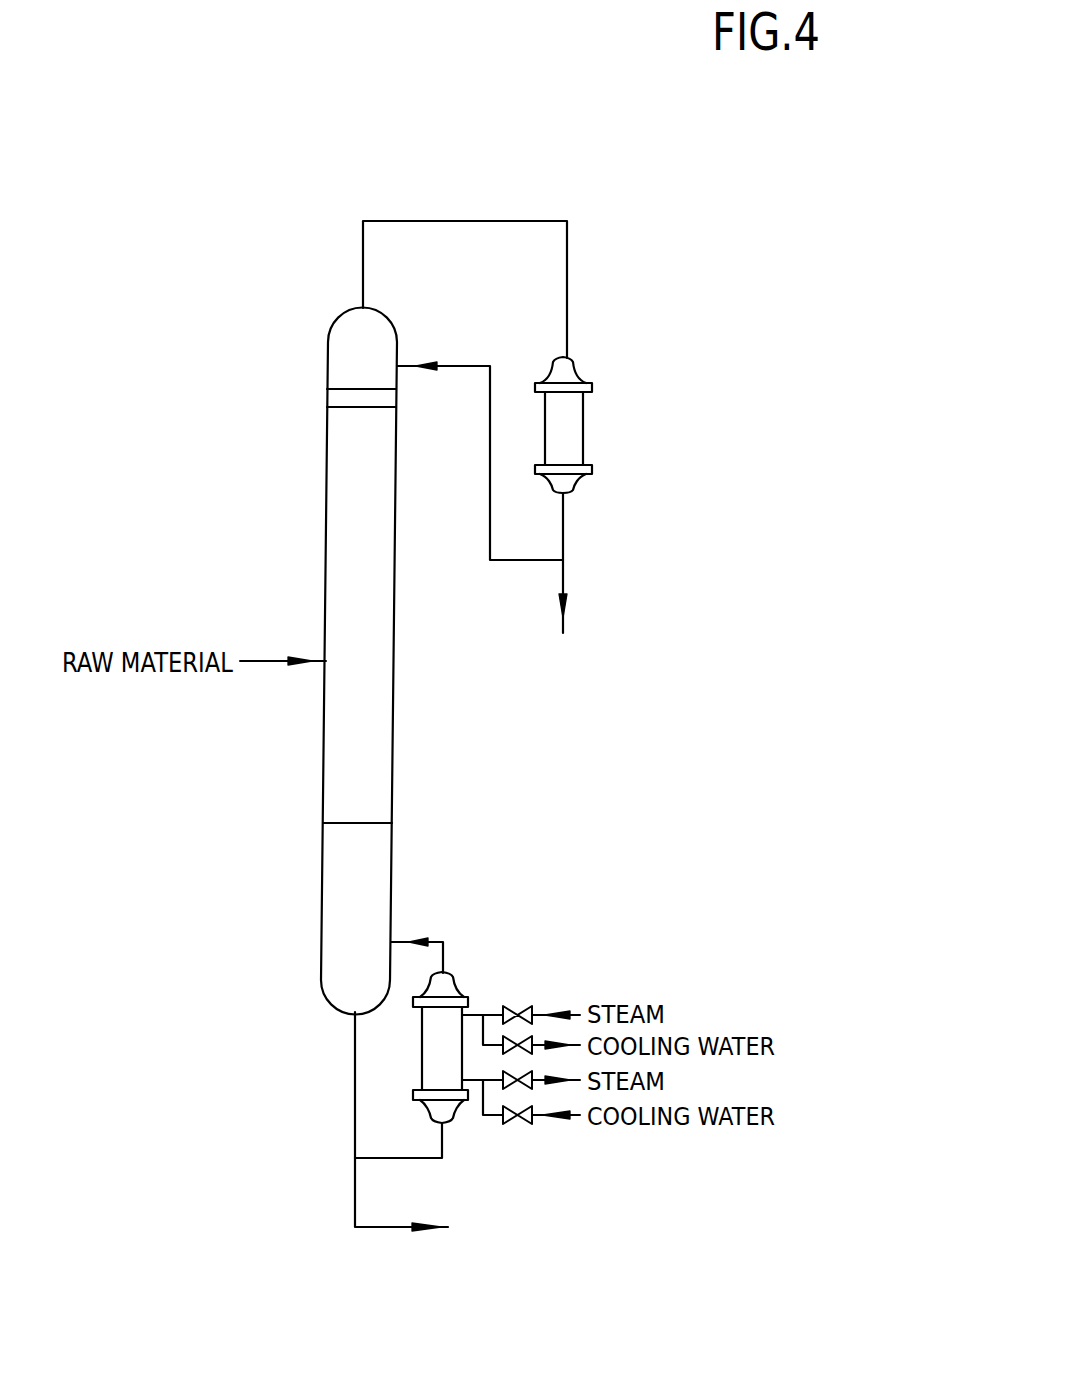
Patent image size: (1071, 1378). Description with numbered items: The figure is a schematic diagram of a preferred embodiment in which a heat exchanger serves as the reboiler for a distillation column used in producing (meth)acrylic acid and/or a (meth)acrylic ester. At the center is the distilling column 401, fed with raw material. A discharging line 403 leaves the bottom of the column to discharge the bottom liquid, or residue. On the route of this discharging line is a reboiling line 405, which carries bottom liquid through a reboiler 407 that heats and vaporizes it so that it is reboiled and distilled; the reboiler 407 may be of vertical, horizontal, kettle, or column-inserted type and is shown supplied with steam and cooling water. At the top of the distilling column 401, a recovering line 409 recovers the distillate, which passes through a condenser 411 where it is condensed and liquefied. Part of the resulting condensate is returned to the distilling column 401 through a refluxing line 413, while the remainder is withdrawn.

The distilling column 401 is at (380, 676).
The discharging line 403 is at (381, 1229).
The reboiling line 405 is at (442, 941).
The reboiler 407 is at (444, 984).
The recovering line 409 is at (478, 220).
The condenser 411 is at (572, 431).
The refluxing line 413 is at (490, 480).